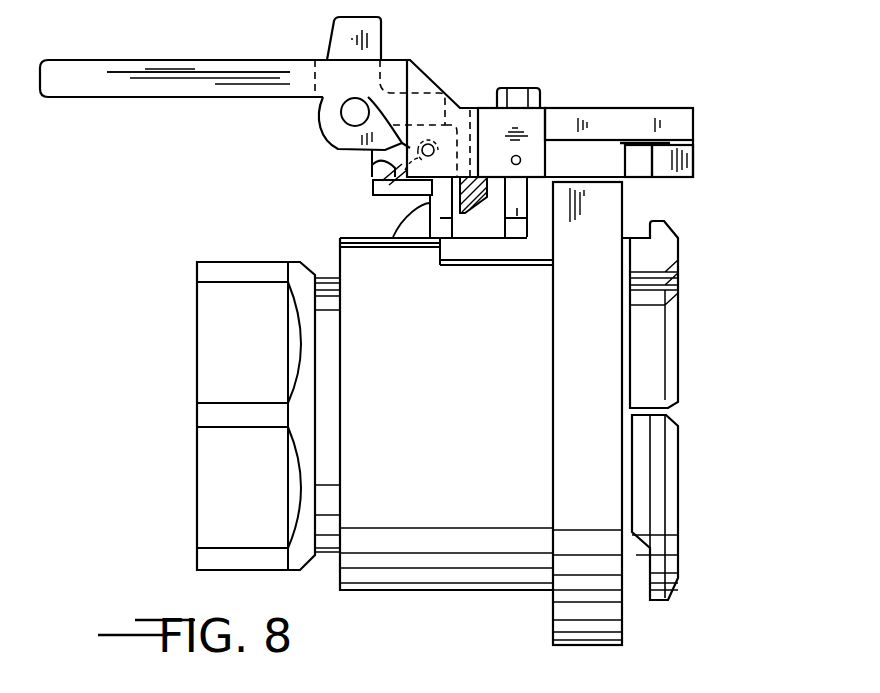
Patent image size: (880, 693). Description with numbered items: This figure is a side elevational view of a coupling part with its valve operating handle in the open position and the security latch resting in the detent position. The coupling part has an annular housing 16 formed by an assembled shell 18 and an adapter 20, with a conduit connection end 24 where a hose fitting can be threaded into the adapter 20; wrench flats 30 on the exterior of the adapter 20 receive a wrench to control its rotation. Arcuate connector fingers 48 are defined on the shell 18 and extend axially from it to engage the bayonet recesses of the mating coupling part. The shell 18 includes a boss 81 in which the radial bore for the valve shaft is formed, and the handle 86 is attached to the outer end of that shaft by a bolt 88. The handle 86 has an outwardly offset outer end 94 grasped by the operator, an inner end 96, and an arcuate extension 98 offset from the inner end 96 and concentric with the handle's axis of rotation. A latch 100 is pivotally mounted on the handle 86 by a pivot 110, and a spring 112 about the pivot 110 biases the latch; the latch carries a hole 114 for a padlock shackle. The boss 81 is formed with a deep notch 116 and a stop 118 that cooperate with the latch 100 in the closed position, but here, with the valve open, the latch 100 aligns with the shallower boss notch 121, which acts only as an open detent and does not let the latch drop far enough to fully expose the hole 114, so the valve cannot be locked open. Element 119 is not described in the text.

The annular housing 16 is at (460, 608).
The shell 18 is at (462, 493).
The adapter 20 is at (213, 571).
The conduit connection end 24 is at (197, 358).
The wrench flats 30 is at (222, 484).
The arcuate connector fingers 48 is at (650, 335).
The shell boss 81 is at (477, 218).
The handle 86 is at (148, 104).
The bolt 88 is at (520, 88).
The handle outer end 94 is at (208, 97).
The handle inner end 96 is at (633, 108).
The arcuate extension 98 is at (678, 180).
The latch 100 is at (382, 31).
The pivot 110 is at (403, 196).
The spring 112 is at (378, 162).
The hole 114 is at (345, 113).
The notch 116 is at (513, 224).
The stop 118 is at (527, 199).
The bracket slot 119 is at (602, 178).
The boss notch 121 is at (399, 248).